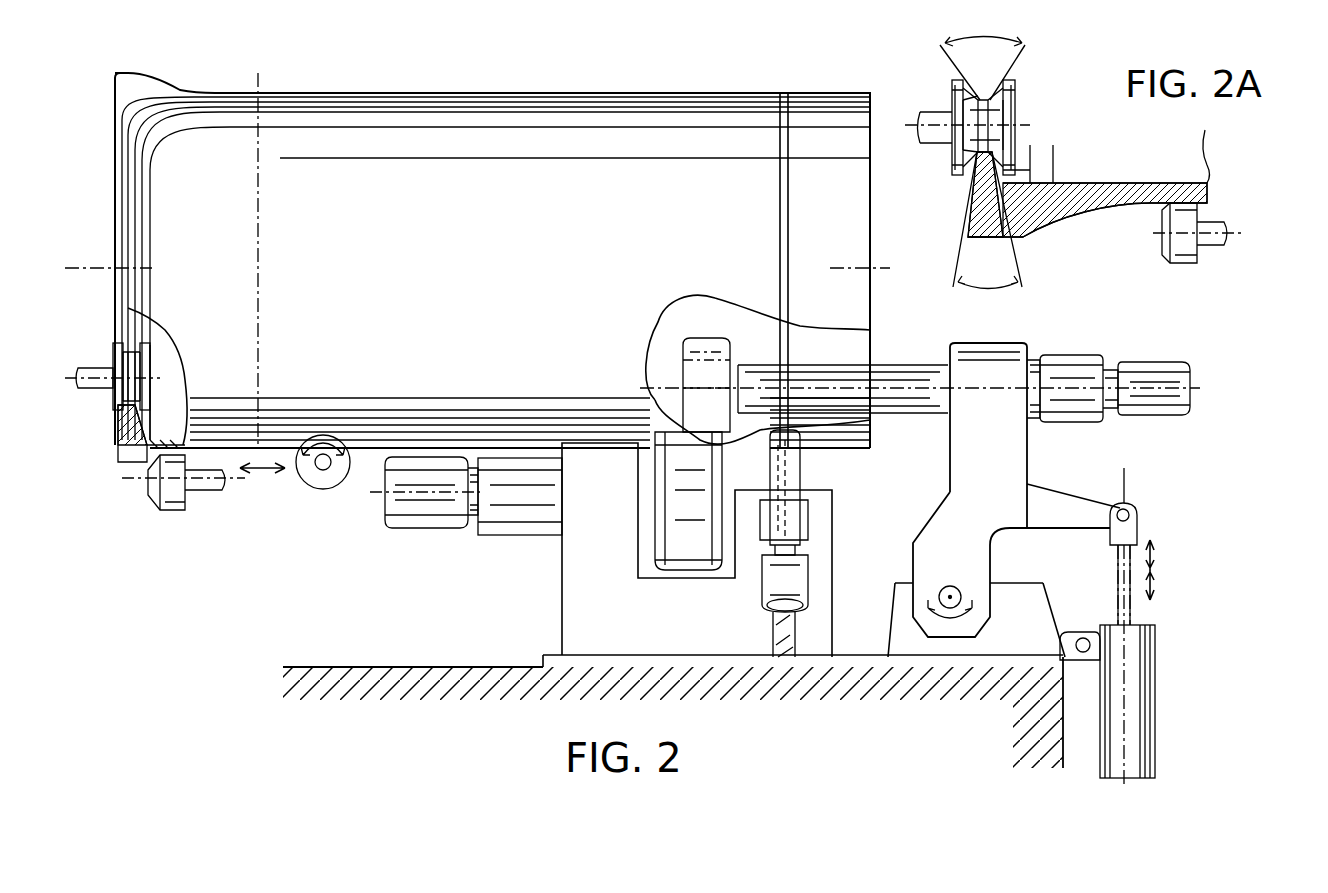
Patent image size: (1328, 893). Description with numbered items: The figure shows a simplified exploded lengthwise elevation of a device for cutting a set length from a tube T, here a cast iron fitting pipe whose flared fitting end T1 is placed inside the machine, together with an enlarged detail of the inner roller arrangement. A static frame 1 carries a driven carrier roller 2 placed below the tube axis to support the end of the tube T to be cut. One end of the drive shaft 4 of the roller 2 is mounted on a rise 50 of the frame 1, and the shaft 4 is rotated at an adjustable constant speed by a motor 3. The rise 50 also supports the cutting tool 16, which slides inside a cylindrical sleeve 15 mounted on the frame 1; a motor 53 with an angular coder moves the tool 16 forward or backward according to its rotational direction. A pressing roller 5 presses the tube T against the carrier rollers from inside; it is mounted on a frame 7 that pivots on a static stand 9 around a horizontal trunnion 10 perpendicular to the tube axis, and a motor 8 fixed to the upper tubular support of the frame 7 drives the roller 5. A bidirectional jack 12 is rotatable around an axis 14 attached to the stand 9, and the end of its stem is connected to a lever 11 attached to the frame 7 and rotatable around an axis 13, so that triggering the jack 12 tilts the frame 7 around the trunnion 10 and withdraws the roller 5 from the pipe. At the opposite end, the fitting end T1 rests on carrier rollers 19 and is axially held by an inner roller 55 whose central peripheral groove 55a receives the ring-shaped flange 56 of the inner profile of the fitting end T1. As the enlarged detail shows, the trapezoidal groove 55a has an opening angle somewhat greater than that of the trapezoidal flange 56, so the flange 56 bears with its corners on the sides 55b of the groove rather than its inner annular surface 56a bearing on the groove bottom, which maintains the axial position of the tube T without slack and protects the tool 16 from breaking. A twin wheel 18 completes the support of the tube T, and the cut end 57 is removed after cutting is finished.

In FIG. 2, the static frame 1 is at (565, 600).
In FIG. 2, the carrier roller 2 is at (672, 528).
In FIG. 2, the motor 3 is at (462, 539).
In FIG. 2, the drive shaft 4 is at (645, 497).
In FIG. 2, the pressing roller 5 is at (715, 350).
In FIG. 2, the frame 7 is at (946, 352).
In FIG. 2, the motor 8 is at (1143, 385).
In FIG. 2, the static stand 9 is at (1038, 607).
In FIG. 2, the trunnion 10 is at (948, 586).
In FIG. 2, the lever 11 is at (1072, 512).
In FIG. 2, the bidirectional jack 12 is at (1145, 668).
In FIG. 2, the axis 13 is at (1138, 512).
In FIG. 2, the axis 14 is at (1083, 637).
In FIG. 2, the cylindrical sleeve 15 is at (785, 472).
In FIG. 2, the cutting tool 16 is at (795, 412).
In FIG. 2, the twin wheel 18 is at (323, 488).
In FIG. 2, the carrier roller 19 is at (158, 492).
In FIG. 2A, the carrier roller 19 is at (1187, 248).
In FIG. 2, the rise 50 is at (630, 475).
In FIG. 2, the motor 53 is at (775, 580).
In FIG. 2, the inner roller 55 is at (104, 407).
In FIG. 2A, the inner roller 55 is at (1025, 104).
In FIG. 2A, the central peripheral groove 55a is at (968, 112).
In FIG. 2A, the sides of the groove 55b is at (970, 85).
In FIG. 2, the ring-shaped flange 56 is at (128, 432).
In FIG. 2A, the ring-shaped flange 56 is at (980, 190).
In FIG. 2A, the inner annular surface 56a is at (1000, 140).
In FIG. 2, the cut end 57 is at (838, 100).
In FIG. 2, the tube T is at (525, 100).
In FIG. 2A, the tube T is at (1120, 203).
In FIG. 2, the fitting end T1 is at (132, 80).
In FIG. 2A, the fitting end T1 is at (965, 240).